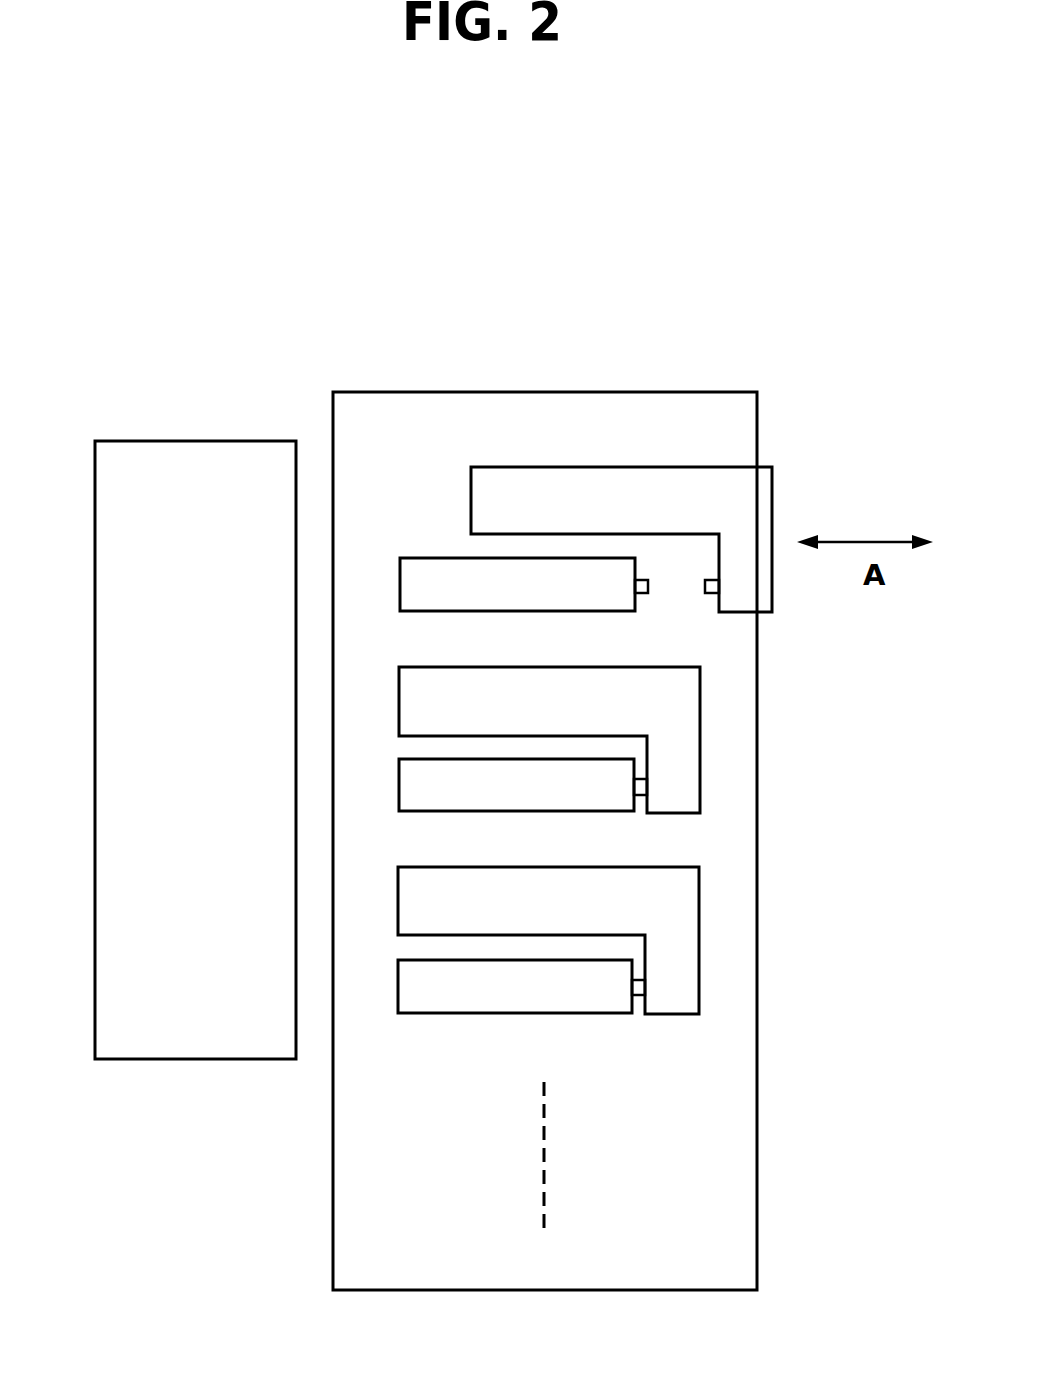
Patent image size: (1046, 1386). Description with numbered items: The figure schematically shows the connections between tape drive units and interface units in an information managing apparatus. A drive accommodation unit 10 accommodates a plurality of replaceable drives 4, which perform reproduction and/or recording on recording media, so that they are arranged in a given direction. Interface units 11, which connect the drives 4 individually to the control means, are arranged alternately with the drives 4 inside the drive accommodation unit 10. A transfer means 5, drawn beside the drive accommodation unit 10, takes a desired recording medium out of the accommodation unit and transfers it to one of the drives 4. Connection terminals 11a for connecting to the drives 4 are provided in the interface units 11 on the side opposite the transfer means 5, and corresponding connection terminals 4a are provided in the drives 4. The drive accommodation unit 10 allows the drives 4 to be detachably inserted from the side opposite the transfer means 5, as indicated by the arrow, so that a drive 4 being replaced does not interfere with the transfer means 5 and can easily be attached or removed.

The transfer means 5 is at (198, 441).
The drive accommodation unit 10 is at (548, 392).
The drive 4 is at (760, 503).
The connection terminal 4a is at (703, 590).
The interface unit 11 is at (558, 585).
The connection terminal 11a is at (650, 588).